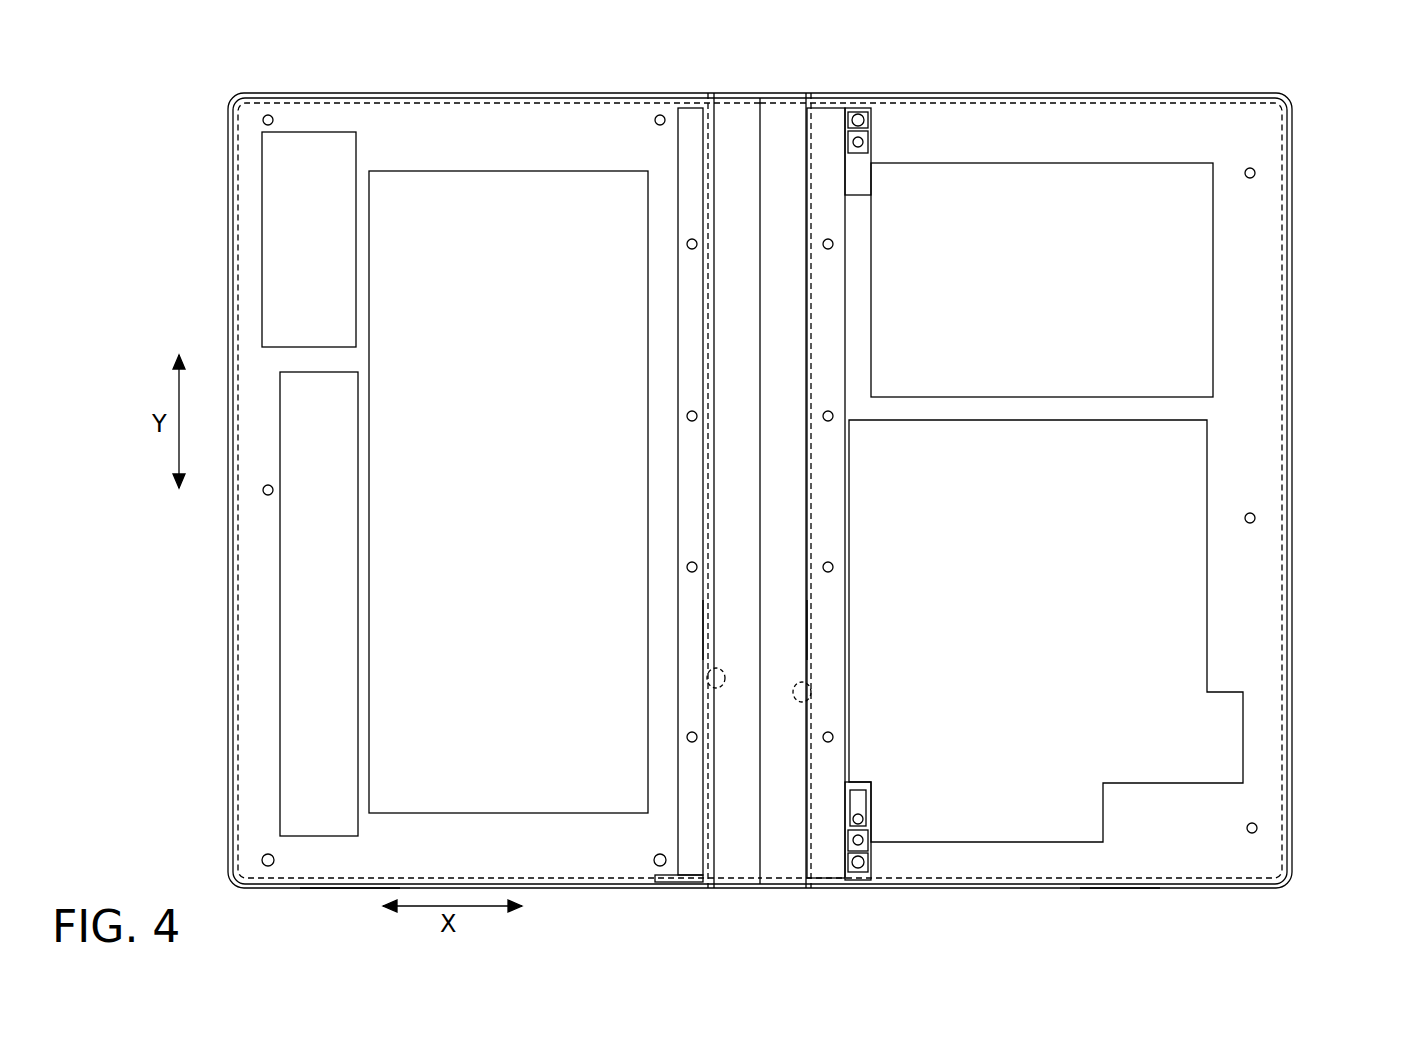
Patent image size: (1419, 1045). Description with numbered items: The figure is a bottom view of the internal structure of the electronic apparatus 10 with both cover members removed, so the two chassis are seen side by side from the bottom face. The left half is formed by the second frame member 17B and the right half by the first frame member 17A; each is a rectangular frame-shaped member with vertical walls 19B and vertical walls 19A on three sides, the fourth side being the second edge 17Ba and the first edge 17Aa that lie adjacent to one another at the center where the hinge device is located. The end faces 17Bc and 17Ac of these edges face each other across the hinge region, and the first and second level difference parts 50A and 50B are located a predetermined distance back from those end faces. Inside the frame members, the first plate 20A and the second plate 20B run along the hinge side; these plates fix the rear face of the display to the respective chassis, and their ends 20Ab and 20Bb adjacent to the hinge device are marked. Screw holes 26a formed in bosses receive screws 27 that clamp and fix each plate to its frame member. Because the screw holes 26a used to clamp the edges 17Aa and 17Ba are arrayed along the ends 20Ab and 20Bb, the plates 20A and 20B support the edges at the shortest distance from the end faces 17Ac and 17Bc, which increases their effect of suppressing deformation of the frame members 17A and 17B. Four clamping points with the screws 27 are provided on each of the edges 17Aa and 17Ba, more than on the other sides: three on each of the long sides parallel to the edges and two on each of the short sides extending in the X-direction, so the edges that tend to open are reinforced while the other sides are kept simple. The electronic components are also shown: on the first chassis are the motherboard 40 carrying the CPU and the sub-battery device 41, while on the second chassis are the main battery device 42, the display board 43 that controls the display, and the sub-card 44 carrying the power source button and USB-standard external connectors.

The electronic apparatus 10 is at (182, 61).
The first frame member 17A is at (1060, 96).
The second frame member 17B is at (415, 96).
The first edge 17Aa is at (740, 492).
The end face 17Ac is at (760, 320).
The second edge 17Ba is at (783, 490).
The end face 17Bc is at (760, 326).
The vertical walls 19A is at (1118, 890).
The vertical walls 19B is at (342, 890).
The first plate 20A is at (1015, 884).
The second plate 20B is at (566, 884).
The end 20Ab is at (808, 698).
The end 20Bb is at (710, 674).
The screw hole 26a is at (762, 491).
The screw 27 is at (268, 114).
The motherboard 40 is at (1065, 823).
The sub-battery device 41 is at (1127, 192).
The main battery device 42 is at (510, 192).
The display board 43 is at (300, 650).
The sub-card 44 is at (268, 231).
The first level difference part 50A is at (830, 632).
The second level difference part 50B is at (690, 633).